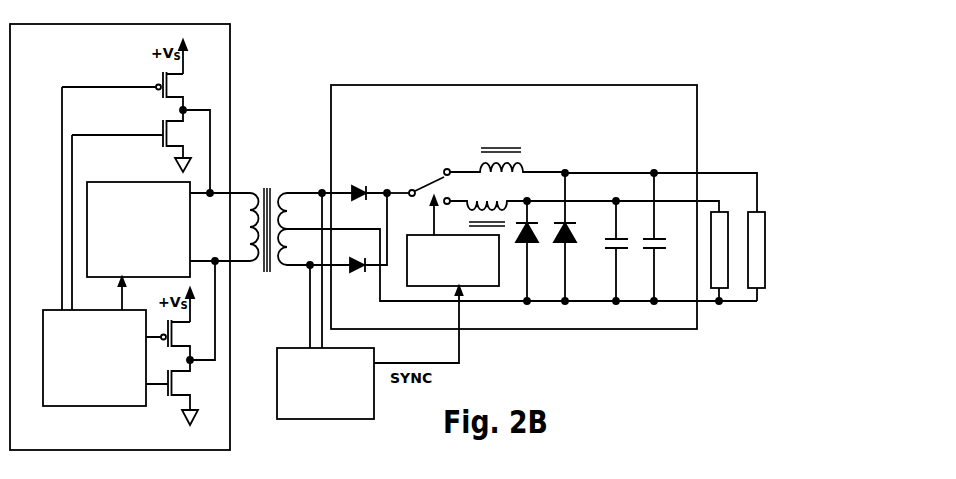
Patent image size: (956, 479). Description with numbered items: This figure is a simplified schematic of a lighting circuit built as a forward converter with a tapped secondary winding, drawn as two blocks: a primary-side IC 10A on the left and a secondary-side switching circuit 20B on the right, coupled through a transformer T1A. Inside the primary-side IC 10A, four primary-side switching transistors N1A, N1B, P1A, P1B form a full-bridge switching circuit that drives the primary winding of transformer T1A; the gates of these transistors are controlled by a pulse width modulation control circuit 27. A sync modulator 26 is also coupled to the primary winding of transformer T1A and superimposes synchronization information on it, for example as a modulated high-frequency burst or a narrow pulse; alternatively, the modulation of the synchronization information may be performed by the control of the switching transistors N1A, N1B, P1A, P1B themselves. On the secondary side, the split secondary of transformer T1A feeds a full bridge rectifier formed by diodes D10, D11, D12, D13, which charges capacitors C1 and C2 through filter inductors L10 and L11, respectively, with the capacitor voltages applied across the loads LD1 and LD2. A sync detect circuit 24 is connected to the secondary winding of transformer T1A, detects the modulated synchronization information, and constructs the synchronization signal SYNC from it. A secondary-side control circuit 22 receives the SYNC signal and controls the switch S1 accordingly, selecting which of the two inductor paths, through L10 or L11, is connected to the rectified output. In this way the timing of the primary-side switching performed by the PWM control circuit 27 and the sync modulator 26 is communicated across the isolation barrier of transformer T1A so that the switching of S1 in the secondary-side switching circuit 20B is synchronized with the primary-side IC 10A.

The primary-side IC 10A is at (125, 66).
The secondary-side switching circuit 20B is at (668, 111).
The secondary-side control circuit 22 is at (487, 261).
The sync detect circuit 24 is at (310, 413).
The sync modulator 26 is at (118, 268).
The pulse width modulation (PWM) control circuit 27 is at (74, 393).
The primary-side switching transistor P1B is at (139, 91).
The primary-side switching transistor N1B is at (140, 141).
The primary-side switching transistor P1A is at (176, 340).
The primary-side switching transistor N1A is at (180, 392).
The transformer T1A is at (268, 218).
The diode D10 is at (354, 182).
The diode D11 is at (348, 246).
The switch S1 is at (429, 181).
The filter inductor L10 is at (507, 150).
The filter inductor L11 is at (488, 205).
The diode D12 is at (540, 251).
The diode D13 is at (578, 237).
The capacitor C1 is at (623, 251).
The capacitor C2 is at (661, 237).
The load LD1 is at (728, 213).
The load LD2 is at (766, 215).